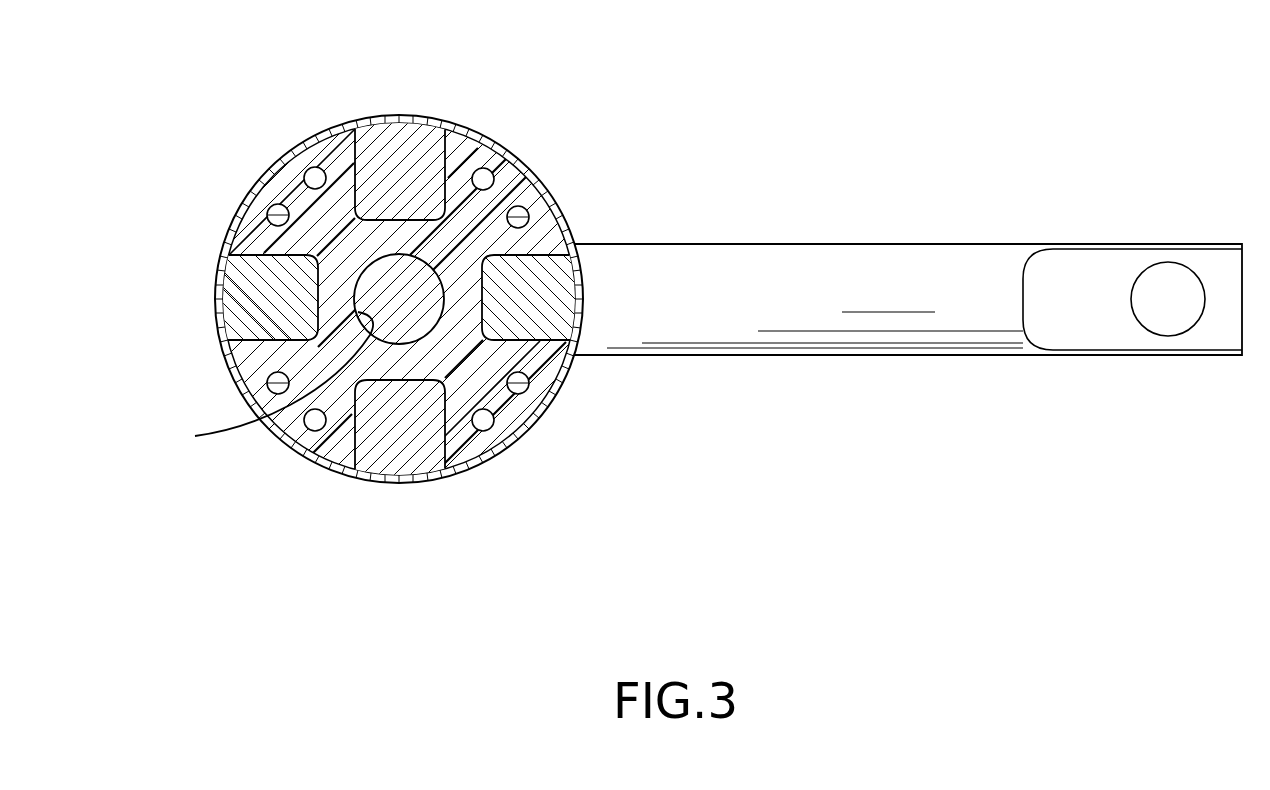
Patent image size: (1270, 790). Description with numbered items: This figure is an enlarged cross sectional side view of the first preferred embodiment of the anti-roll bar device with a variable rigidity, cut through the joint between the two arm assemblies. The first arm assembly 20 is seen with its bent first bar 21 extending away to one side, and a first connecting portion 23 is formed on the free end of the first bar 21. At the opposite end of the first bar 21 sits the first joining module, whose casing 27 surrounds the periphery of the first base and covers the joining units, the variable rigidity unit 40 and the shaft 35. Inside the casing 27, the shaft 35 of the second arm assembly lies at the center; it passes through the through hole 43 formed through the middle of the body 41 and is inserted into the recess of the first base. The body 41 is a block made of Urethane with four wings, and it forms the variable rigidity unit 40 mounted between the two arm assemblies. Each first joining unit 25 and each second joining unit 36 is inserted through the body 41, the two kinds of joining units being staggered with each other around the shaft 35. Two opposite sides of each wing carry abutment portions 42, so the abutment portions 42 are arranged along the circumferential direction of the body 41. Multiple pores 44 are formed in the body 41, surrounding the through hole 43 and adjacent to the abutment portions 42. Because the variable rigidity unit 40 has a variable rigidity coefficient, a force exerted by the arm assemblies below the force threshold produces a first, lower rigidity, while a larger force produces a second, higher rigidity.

The first arm assembly 20 is at (757, 217).
The first bar 21 is at (833, 257).
The first connecting portion 23 is at (1108, 258).
The first joining unit 25 is at (548, 290).
The casing 27 is at (538, 412).
The shaft 35 is at (425, 285).
The second joining unit 36 is at (395, 140).
The variable rigidity unit 40 is at (506, 444).
The body 41 is at (330, 443).
The abutment portion 42 is at (430, 168).
The through hole 43 is at (269, 385).
The pore 44 is at (315, 178).